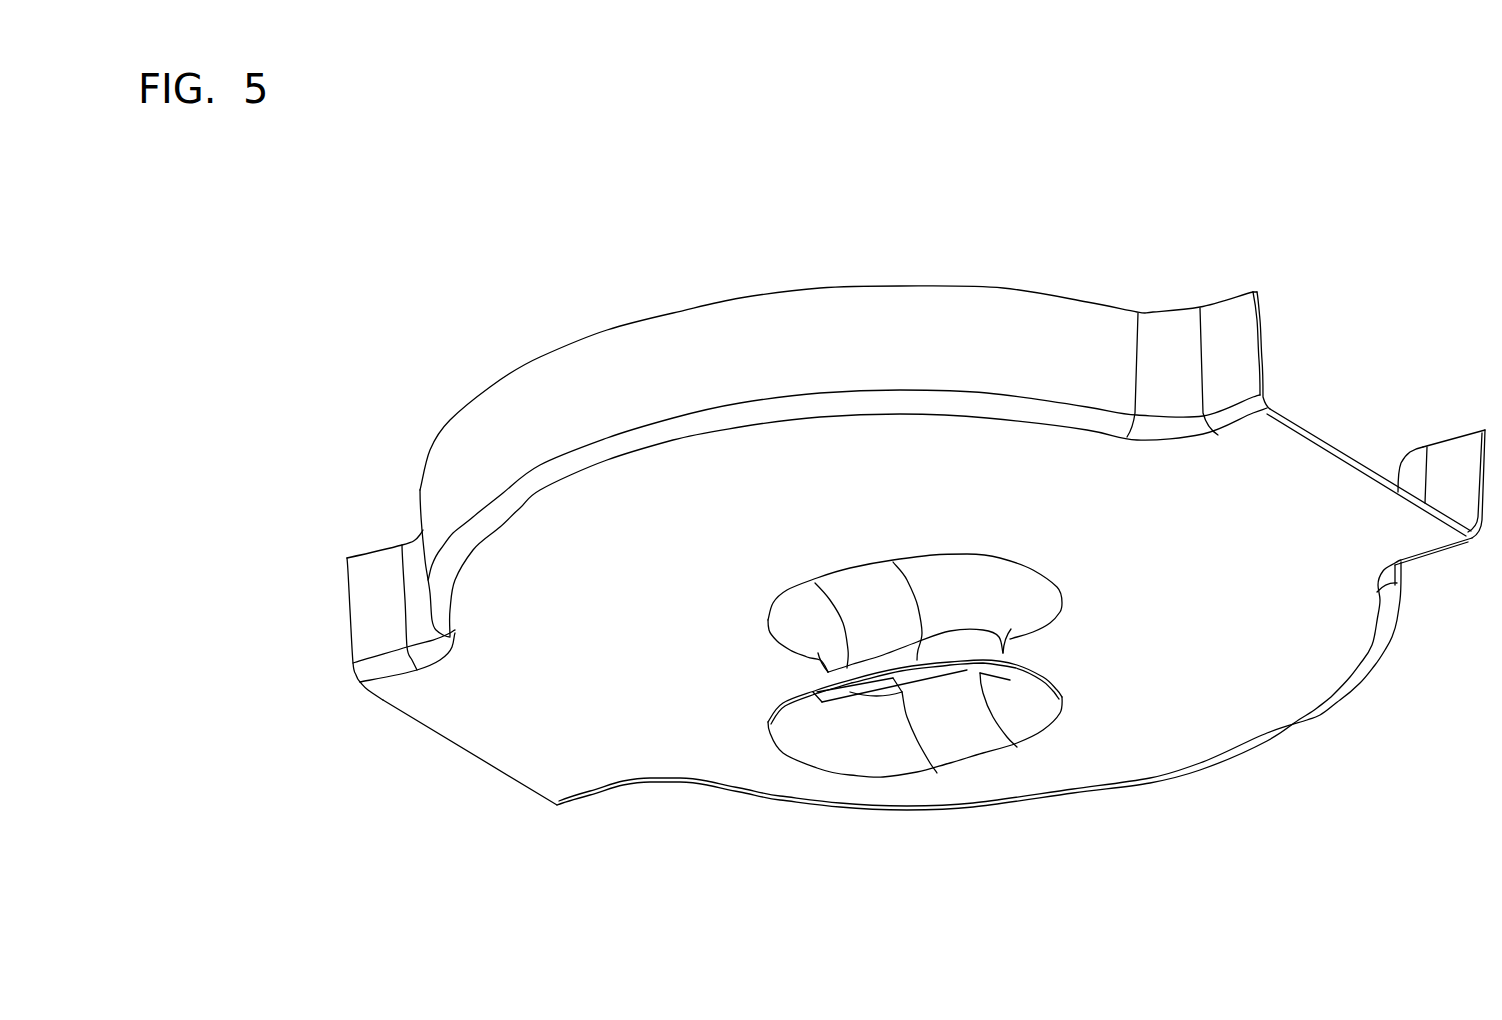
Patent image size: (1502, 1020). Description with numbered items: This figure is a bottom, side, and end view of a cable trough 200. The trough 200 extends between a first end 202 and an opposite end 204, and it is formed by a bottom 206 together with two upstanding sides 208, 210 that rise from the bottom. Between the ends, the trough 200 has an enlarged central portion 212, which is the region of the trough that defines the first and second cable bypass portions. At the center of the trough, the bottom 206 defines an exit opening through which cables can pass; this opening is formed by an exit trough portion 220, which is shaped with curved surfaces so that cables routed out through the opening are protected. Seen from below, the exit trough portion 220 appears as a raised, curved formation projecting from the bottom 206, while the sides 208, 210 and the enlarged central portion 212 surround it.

The trough 200 is at (770, 210).
The first end 202 is at (468, 755).
The opposite end 204 is at (1333, 458).
The bottom 206 is at (645, 606).
The upstanding side 208 is at (1450, 438).
The upstanding side 210 is at (815, 362).
The enlarged central portion 212 is at (877, 285).
The exit trough portion 220 is at (1062, 697).